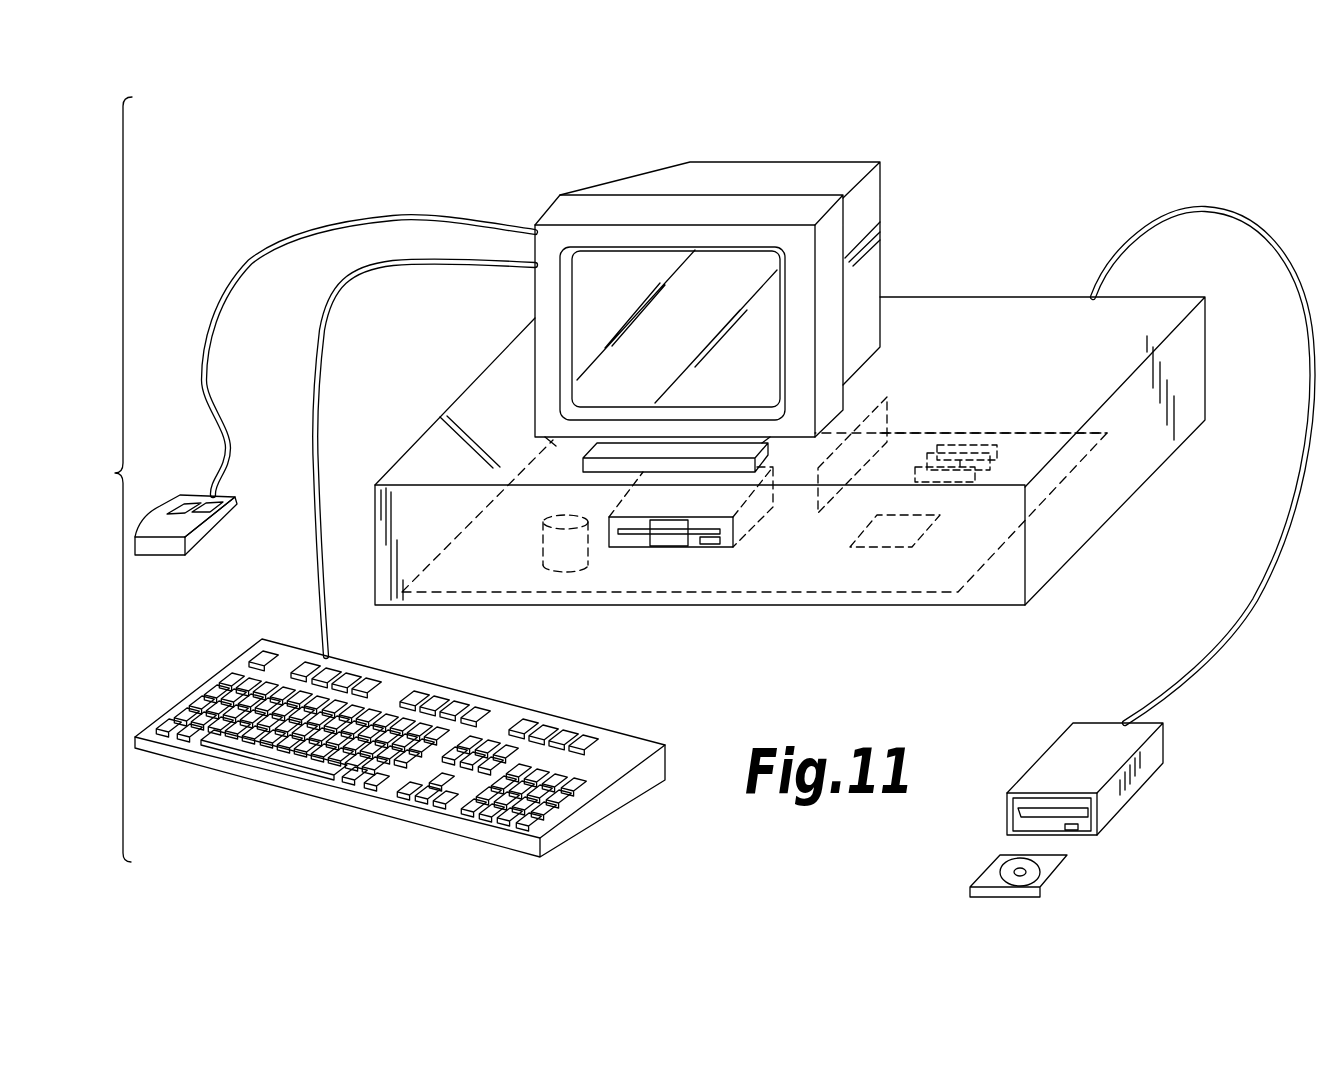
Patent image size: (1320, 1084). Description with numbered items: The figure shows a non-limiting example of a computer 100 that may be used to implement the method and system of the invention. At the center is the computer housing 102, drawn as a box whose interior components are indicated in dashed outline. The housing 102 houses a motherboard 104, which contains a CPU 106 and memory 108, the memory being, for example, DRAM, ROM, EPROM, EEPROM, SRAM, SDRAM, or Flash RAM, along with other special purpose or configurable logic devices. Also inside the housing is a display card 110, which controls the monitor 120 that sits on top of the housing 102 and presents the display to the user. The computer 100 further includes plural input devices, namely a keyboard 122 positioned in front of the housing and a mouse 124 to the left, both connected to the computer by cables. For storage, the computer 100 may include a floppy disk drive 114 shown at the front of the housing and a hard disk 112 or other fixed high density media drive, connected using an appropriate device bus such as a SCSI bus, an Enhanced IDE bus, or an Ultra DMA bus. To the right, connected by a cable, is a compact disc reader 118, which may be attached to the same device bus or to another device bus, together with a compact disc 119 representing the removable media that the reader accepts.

The computer 100 is at (104, 479).
The computer housing 102 is at (981, 316).
The motherboard 104 is at (1032, 450).
The CPU 106 is at (923, 523).
The memory 108 is at (960, 448).
The display card 110 is at (893, 403).
The hard disk 112 is at (552, 542).
The floppy disk drive 114 is at (728, 540).
The compact disc reader 118 is at (1067, 743).
The compact disc 119 is at (1037, 872).
The monitor 120 is at (778, 178).
The keyboard 122 is at (622, 798).
The mouse 124 is at (217, 523).